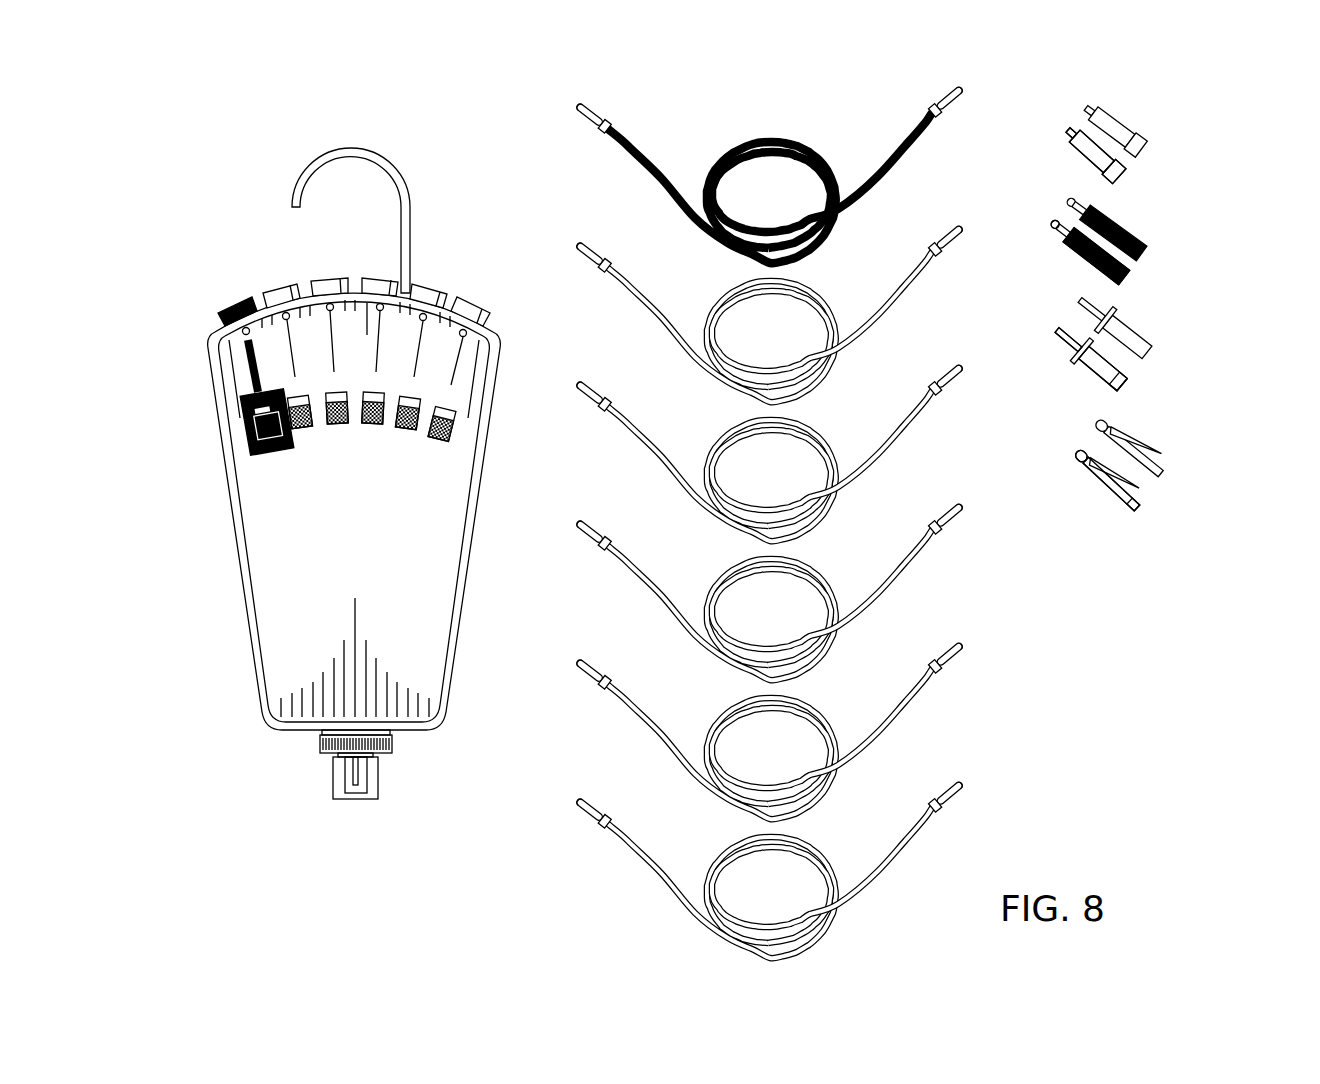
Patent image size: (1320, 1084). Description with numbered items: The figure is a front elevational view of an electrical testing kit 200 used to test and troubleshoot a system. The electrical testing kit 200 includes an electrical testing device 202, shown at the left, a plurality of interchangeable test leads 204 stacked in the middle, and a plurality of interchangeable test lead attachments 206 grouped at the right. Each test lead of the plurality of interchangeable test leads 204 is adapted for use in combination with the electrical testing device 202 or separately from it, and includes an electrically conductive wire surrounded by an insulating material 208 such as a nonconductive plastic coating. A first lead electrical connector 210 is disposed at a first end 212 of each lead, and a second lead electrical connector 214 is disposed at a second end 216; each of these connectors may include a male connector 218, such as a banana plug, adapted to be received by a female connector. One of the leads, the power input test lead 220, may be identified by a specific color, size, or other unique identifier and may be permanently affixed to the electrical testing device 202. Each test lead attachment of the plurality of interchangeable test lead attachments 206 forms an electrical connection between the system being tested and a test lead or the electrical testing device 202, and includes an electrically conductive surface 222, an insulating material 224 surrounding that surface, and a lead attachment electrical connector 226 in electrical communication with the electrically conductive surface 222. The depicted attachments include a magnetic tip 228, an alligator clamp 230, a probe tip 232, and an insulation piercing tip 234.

The electrical testing kit 200 is at (168, 112).
The electrical testing device 202 is at (187, 326).
The plurality of interchangeable test leads 204 is at (513, 110).
The plurality of interchangeable test lead attachments 206 is at (1241, 126).
The insulating material 208 is at (769, 516).
The first lead electrical connector 210 is at (595, 439).
The first end 212 is at (594, 504).
The second lead electrical connector 214 is at (943, 422).
The second end 216 is at (940, 488).
The male connector 218 is at (767, 475).
The power input test lead 220 is at (771, 161).
The electrically conductive surface 222 is at (1068, 128).
The insulating material 224 is at (1098, 155).
The lead attachment electrical connector 226 is at (1125, 176).
The magnetic tip 228 is at (1148, 113).
The alligator clamp 230 is at (1174, 436).
The probe tip 232 is at (1154, 313).
The insulation piercing tip 234 is at (1146, 218).